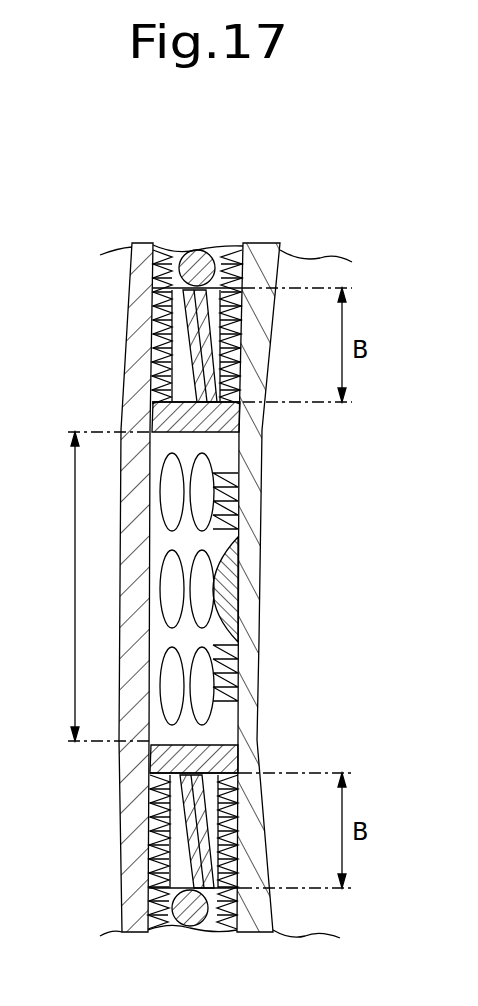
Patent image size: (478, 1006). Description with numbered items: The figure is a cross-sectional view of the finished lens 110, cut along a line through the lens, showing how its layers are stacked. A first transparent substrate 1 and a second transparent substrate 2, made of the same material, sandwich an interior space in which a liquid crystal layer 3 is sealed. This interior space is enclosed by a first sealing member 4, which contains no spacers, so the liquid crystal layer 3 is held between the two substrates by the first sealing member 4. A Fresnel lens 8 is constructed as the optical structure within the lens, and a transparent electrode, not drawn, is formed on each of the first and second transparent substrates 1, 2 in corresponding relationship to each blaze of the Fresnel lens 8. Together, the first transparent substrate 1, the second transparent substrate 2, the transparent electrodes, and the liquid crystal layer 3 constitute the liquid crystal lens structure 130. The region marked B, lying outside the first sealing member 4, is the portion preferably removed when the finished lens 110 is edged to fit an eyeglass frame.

The finished lens 110 is at (249, 208).
The first transparent substrate 1 is at (137, 260).
The second transparent substrate 2 is at (262, 262).
The liquid crystal layer 3 is at (172, 638).
The first sealing member 4 is at (208, 435).
The Fresnel lens 8 is at (233, 545).
The liquid crystal lens structure 130 is at (49, 586).